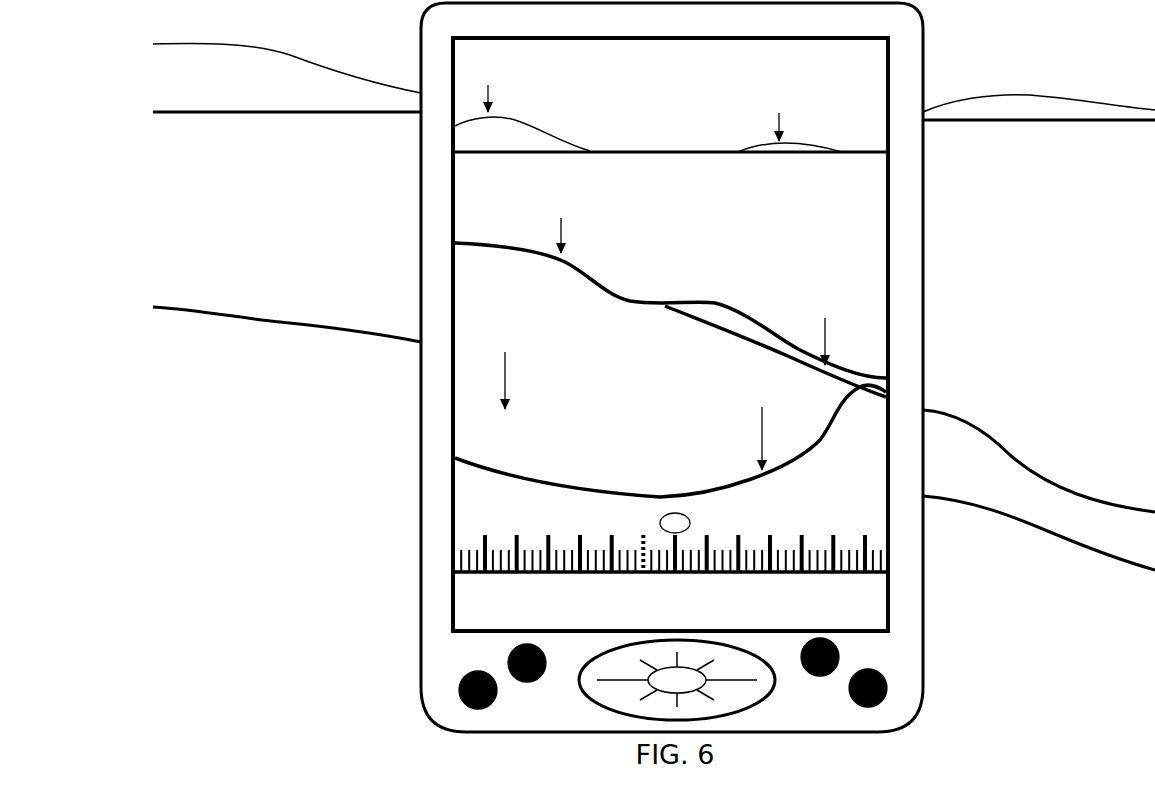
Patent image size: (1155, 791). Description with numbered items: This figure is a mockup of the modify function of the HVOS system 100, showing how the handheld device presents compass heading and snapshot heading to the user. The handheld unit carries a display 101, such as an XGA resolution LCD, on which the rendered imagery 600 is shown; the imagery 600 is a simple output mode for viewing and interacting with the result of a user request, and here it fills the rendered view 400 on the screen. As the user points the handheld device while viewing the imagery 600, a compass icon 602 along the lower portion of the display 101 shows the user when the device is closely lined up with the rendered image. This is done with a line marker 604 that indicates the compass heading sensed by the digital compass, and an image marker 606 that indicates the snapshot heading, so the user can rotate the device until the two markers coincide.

The HVOS system 100 is at (923, 575).
The display 101 is at (888, 208).
The rendered map view 400 is at (923, 295).
The imagery 600 is at (225, 318).
The compass icon 602 is at (466, 545).
The line marker 604 is at (637, 538).
The image marker 606 is at (692, 512).